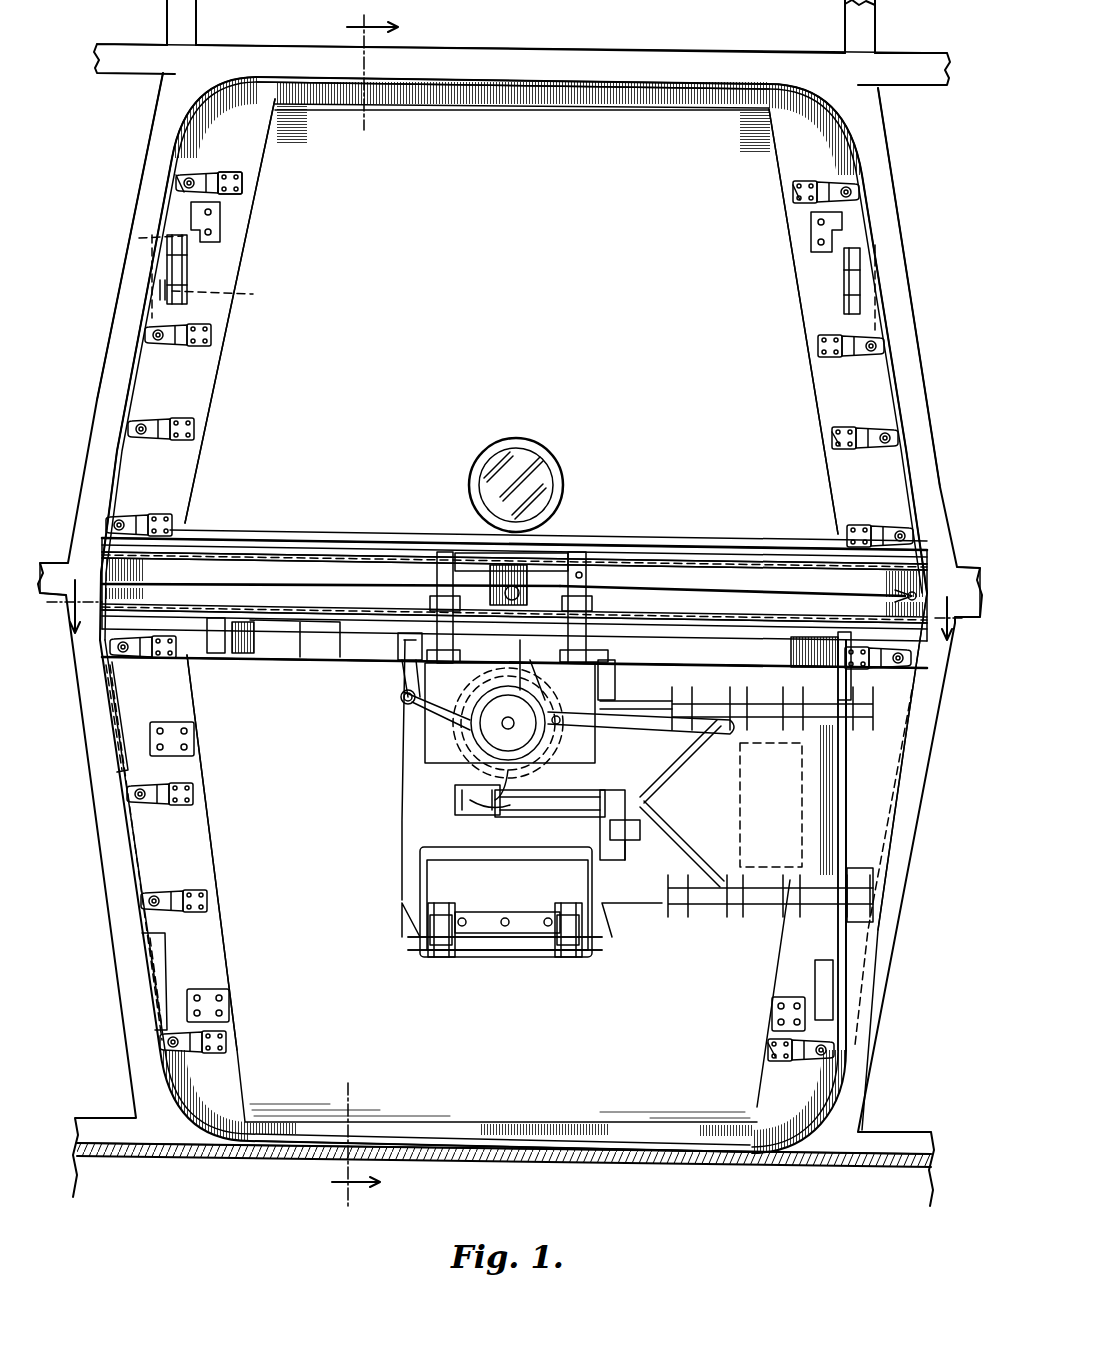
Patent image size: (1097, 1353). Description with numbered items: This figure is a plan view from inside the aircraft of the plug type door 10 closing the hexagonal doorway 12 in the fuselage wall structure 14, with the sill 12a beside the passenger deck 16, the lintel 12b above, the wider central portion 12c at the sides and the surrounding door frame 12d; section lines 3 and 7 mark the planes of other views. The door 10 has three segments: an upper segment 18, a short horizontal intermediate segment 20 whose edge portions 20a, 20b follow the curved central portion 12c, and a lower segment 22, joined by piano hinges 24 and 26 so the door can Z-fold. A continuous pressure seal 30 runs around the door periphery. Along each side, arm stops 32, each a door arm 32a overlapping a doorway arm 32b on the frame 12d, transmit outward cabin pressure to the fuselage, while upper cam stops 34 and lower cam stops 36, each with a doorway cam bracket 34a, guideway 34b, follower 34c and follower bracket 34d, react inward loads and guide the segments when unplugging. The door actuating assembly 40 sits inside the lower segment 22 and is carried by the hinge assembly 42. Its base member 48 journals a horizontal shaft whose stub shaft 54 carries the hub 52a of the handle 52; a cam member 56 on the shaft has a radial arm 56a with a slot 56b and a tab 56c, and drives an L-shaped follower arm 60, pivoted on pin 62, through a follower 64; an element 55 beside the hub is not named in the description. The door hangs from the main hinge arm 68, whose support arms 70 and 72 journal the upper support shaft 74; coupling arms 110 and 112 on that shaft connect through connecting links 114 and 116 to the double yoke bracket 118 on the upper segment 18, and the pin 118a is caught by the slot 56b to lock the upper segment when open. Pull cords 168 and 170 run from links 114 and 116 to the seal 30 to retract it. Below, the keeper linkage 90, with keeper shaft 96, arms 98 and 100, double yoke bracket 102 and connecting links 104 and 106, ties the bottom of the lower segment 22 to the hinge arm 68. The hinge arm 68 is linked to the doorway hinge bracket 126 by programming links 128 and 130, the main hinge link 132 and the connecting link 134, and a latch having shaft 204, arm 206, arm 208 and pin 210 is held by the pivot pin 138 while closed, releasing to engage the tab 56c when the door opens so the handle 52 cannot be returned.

The section line 3- 3 is at (373, 611).
The section line 7- 7 is at (505, 632).
The door 10 is at (521, 120).
The doorway 12 is at (415, 84).
The sill 12a is at (577, 1150).
The lintel 12b is at (606, 88).
The central portion of the doorway 12c is at (95, 558).
The door frame 12d is at (105, 350).
The wall structure 14 is at (200, 66).
The passenger deck 16 is at (860, 1130).
The upper segment 18 is at (394, 351).
The intermediate segment 20 is at (343, 613).
The edge portion of the intermediate segment 20a is at (930, 583).
The edge portion of the intermediate segment 20b is at (95, 618).
The lower segment 22 is at (306, 781).
The hinge 24 is at (300, 554).
The hinge 26 is at (296, 620).
The pressure seal 30 is at (312, 84).
The arm stops 32 is at (240, 172).
The door arm 32a is at (242, 190).
The doorway arm 32b is at (178, 182).
The upper cam stops 34 is at (200, 255).
The doorway cam bracket 34a is at (175, 290).
The guideway 34b is at (230, 296).
The follower 34c is at (138, 240).
The follower bracket 34d is at (220, 225).
The lower cam stops 36 is at (194, 726).
The door actuating assembly 40 is at (388, 836).
The hinge assembly 42 is at (718, 944).
The base member 48 is at (430, 760).
The handle 52 is at (612, 735).
The hub 52a is at (420, 712).
The stub shaft 54 is at (530, 692).
The hub 55 is at (502, 696).
The cam member 56 is at (480, 672).
The radial arm 56a is at (495, 808).
The slot 56b is at (520, 772).
The tab 56c is at (532, 660).
The follower arm 60 is at (410, 705).
The pivot pin 62 is at (640, 704).
The follower 64 is at (568, 740).
The main hinge arm 68 is at (642, 905).
The support arm 70 is at (398, 672).
The support arm 72 is at (615, 675).
The upper support shaft 74 is at (520, 660).
The keeper linkage 90 is at (404, 685).
The keeper shaft 96 is at (505, 952).
The arm 98 is at (442, 957).
The arm 100 is at (568, 957).
The double yoke bracket 102 is at (490, 912).
The connecting link 104 is at (440, 903).
The connecting link 106 is at (568, 903).
The coupling arm 110 is at (436, 640).
The coupling arm 112 is at (590, 642).
The connecting link 114 is at (430, 553).
The connecting link 116 is at (585, 576).
The double yoke bracket 118 is at (572, 552).
The pin 118a is at (520, 595).
The doorway hinge bracket 126 is at (885, 792).
The programming link 128 is at (825, 705).
The programming link 130 is at (760, 704).
The main hinge link 132 is at (835, 790).
The connecting link 134 is at (660, 825).
The pivot pin 138 is at (655, 790).
The pull cord 168 is at (255, 582).
The pull cord 170 is at (690, 585).
The latch shaft 204 is at (540, 817).
The latch arm 206 is at (455, 797).
The arm 208 is at (602, 825).
The pin 210 is at (626, 850).